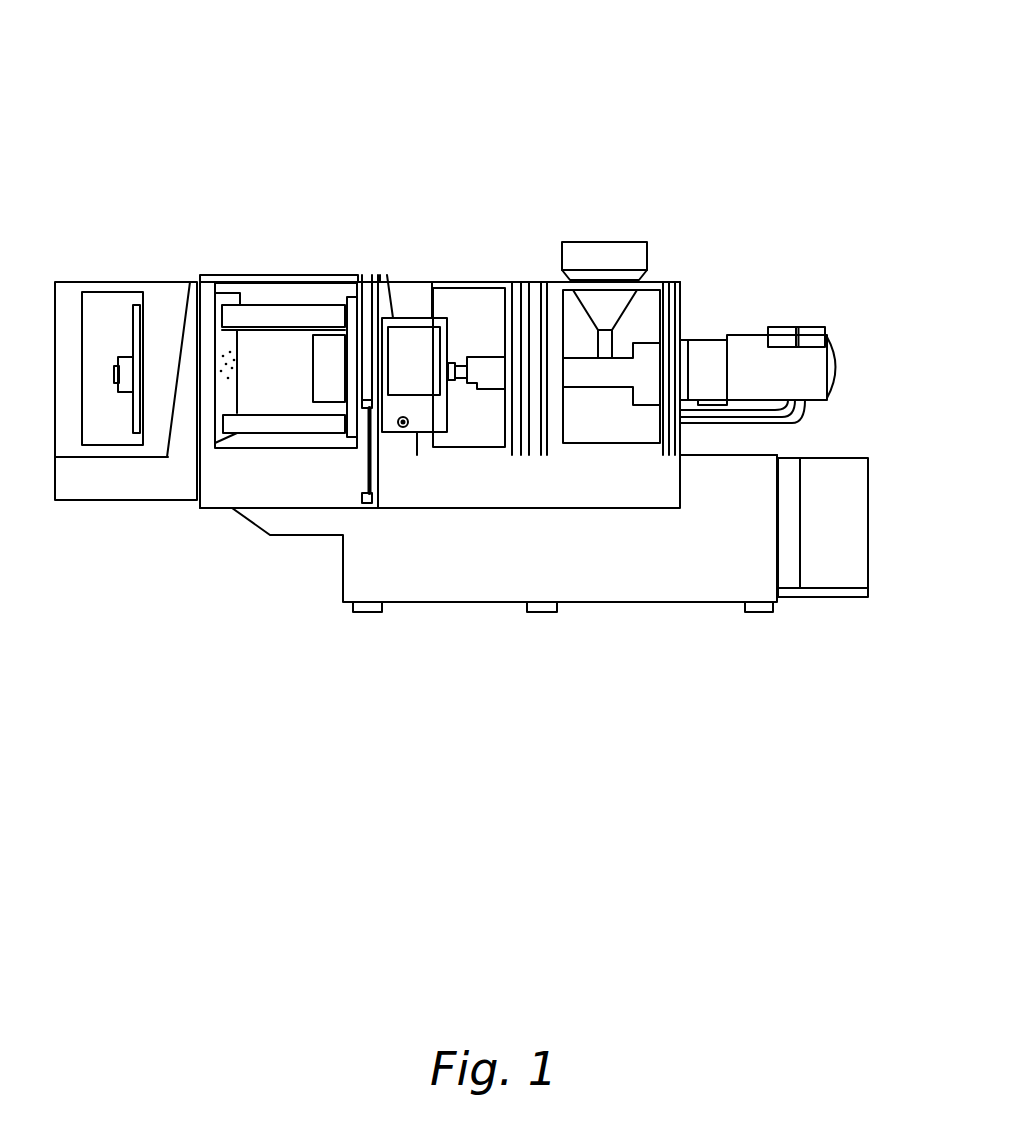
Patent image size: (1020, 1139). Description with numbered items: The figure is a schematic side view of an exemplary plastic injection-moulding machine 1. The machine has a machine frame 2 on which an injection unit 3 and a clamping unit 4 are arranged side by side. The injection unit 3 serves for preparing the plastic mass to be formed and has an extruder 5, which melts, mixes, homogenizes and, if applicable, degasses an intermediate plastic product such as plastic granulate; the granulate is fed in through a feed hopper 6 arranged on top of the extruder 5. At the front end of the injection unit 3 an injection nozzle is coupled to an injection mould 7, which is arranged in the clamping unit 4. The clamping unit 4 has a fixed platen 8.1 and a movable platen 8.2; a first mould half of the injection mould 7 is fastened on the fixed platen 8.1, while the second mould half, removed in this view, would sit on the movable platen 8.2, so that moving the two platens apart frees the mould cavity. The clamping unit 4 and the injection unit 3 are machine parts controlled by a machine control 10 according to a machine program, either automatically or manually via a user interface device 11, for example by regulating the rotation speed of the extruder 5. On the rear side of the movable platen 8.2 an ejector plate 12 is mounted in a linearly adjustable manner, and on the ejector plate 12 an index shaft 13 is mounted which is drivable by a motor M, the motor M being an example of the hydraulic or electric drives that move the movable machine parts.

The injection-moulding machine 1 is at (732, 119).
The machine frame 2 is at (650, 572).
The injection unit 3 is at (726, 281).
The clamping unit 4 is at (278, 200).
The extruder 5 is at (753, 350).
The feed hopper 6 is at (603, 250).
The injection mould 7 is at (333, 355).
The fixed platen 8.1 is at (353, 305).
The movable platen 8.2 is at (225, 348).
The machine control 10 is at (822, 563).
The user interface device 11 is at (417, 343).
The ejector plate 12 is at (132, 343).
The index shaft 13 is at (116, 374).
The motor M is at (127, 392).